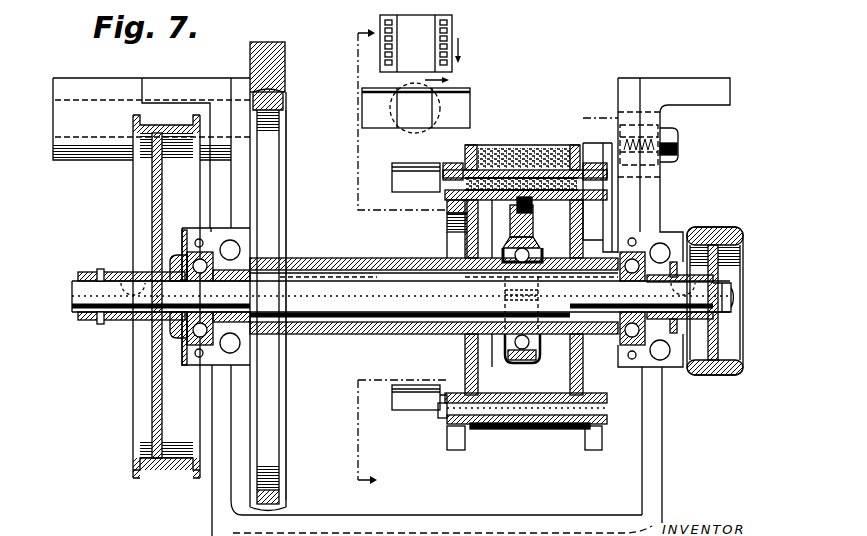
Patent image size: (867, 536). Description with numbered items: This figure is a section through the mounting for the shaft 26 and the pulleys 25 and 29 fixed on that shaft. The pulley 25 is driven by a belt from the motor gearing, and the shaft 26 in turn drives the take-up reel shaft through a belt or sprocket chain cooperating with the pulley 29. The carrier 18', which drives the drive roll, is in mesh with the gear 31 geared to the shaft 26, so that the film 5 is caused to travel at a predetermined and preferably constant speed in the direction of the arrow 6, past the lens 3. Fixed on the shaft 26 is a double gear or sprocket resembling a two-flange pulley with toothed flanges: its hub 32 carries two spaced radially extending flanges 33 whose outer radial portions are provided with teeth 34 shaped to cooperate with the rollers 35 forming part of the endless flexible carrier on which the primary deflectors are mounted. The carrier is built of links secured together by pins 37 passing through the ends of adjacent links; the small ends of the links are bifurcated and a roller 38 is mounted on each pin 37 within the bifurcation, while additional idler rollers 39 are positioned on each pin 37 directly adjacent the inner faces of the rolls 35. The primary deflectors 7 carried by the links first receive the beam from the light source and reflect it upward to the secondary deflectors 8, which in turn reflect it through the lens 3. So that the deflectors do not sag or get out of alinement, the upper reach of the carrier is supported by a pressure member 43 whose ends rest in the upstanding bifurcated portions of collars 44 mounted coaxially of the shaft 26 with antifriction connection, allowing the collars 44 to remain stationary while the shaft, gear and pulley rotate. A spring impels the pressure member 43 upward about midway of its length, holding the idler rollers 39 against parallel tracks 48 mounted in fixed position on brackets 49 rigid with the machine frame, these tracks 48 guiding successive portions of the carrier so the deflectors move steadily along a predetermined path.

The carrier 18' is at (257, 258).
The arrow 6 is at (398, 259).
The film 5 is at (449, 32).
The lens 3 is at (362, 107).
The secondary deflector 8 is at (416, 108).
The parallel tracks 48 is at (470, 148).
The brackets 49 is at (610, 118).
The rollers 35 is at (447, 168).
The primary deflector 7 is at (392, 172).
The gear 31 is at (286, 218).
The flanges 33 is at (447, 232).
The hub 32 is at (462, 258).
The pressure member 43 is at (512, 233).
The collars 44 is at (533, 218).
The pulley 29 is at (717, 227).
The shaft 26 is at (72, 300).
The pulley 25 is at (150, 470).
The roller 38 is at (526, 393).
The pins 37 is at (443, 417).
The idler rollers 39 is at (472, 428).
The teeth 34 is at (452, 450).